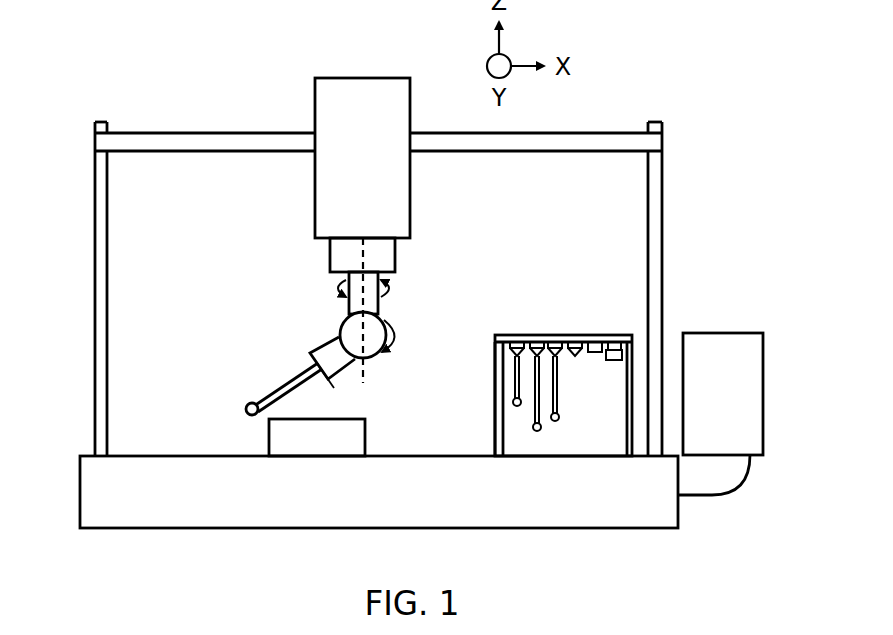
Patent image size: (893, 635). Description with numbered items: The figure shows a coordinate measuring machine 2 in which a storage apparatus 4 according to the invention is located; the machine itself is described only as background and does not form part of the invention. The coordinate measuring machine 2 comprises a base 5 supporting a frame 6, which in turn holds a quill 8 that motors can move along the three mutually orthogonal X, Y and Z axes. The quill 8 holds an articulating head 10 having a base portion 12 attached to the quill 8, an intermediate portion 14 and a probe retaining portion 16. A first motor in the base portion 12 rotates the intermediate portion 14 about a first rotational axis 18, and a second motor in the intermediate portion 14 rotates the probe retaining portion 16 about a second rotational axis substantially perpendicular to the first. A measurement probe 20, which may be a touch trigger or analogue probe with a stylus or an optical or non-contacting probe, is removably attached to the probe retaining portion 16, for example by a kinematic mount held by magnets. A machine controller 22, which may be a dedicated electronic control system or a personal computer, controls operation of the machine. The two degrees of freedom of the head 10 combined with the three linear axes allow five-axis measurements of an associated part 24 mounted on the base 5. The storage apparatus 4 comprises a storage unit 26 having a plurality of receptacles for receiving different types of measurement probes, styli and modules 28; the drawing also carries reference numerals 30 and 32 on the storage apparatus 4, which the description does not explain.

The coordinate measuring machine 2 is at (441, 287).
The storage apparatus 4 is at (531, 380).
The base 5 is at (352, 516).
The frame 6 is at (108, 152).
The quill 8 is at (370, 169).
The articulating head 10 is at (368, 326).
The base portion 12 is at (343, 263).
The intermediate portion 14 is at (356, 290).
The probe retaining portion 16 is at (346, 331).
The first rotational axis 18 is at (366, 372).
The measurement probe 20 is at (282, 361).
The machine controller 22 is at (705, 416).
The part 24 is at (299, 453).
The storage unit 26 is at (524, 336).
The measurement probes, styli and modules 28 is at (555, 396).
The rack wall 30 is at (493, 432).
The rack top corner module 32 is at (625, 335).